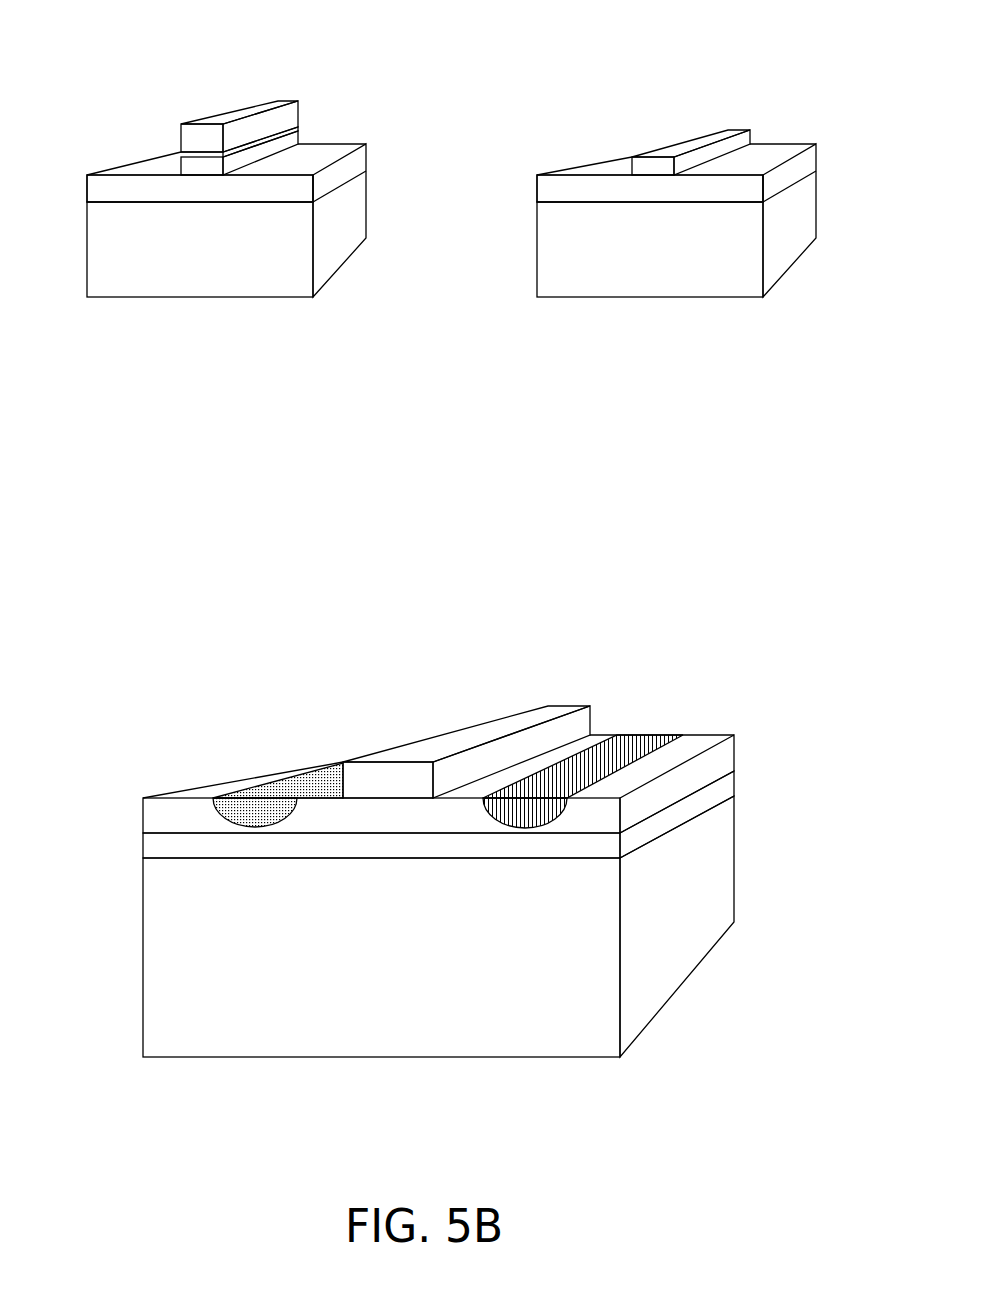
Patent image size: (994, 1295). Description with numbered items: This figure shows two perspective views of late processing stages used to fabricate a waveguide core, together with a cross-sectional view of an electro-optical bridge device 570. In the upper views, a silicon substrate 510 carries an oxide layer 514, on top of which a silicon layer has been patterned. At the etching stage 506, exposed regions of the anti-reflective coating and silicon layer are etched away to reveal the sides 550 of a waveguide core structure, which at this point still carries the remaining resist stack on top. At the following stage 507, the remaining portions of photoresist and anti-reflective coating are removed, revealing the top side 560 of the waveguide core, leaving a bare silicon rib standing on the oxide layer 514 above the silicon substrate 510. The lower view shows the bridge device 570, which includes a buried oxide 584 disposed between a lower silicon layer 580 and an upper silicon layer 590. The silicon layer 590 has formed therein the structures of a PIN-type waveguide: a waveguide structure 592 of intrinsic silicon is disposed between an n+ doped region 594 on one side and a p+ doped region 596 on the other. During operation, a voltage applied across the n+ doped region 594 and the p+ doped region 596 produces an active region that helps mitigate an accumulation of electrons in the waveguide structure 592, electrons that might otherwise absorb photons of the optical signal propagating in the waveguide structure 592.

The etching stage 506 is at (236, 157).
The stage 507 is at (687, 157).
The silicon substrate 510 is at (232, 263).
The oxide layer 514 is at (253, 203).
The sides of waveguide core structure 550 is at (176, 166).
The top side of waveguide core 560 is at (671, 146).
The electro-optical bridge device 570 is at (412, 790).
The silicon layer 580 is at (413, 970).
The buried oxide 584 is at (138, 847).
The silicon layer 590 is at (138, 818).
The waveguide structure 592 is at (487, 731).
The n+ doped region 594 is at (269, 783).
The p+ doped region 596 is at (633, 748).